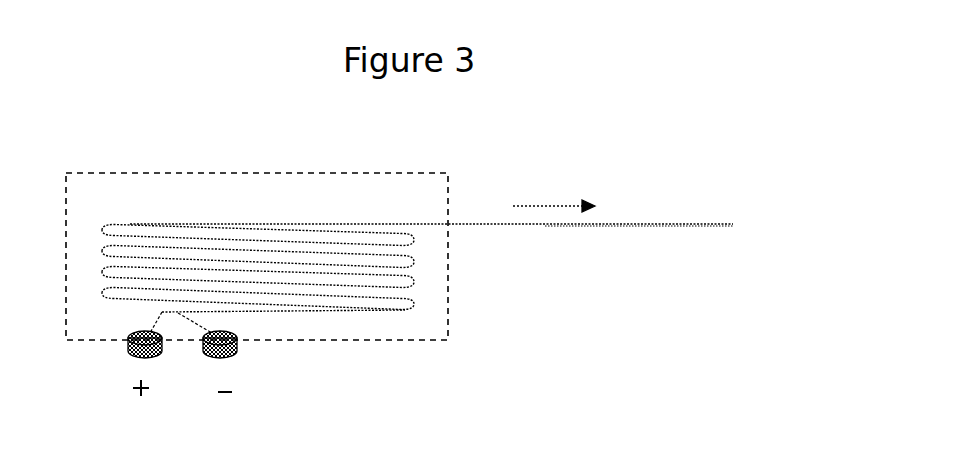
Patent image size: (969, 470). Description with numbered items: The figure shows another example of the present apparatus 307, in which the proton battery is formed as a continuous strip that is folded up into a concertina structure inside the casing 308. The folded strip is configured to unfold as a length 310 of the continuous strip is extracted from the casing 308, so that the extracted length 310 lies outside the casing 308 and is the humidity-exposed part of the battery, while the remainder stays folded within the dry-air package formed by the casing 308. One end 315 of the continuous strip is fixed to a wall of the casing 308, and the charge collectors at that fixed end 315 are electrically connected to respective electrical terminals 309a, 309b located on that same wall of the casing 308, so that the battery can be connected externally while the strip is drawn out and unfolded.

The apparatus 307 is at (92, 119).
The casing 308 is at (505, 382).
The electrical terminal 309a is at (218, 355).
The electrical terminal 309b is at (128, 352).
The length of the continuous strip 310 is at (647, 215).
The end of the continuous strip 315 is at (268, 311).